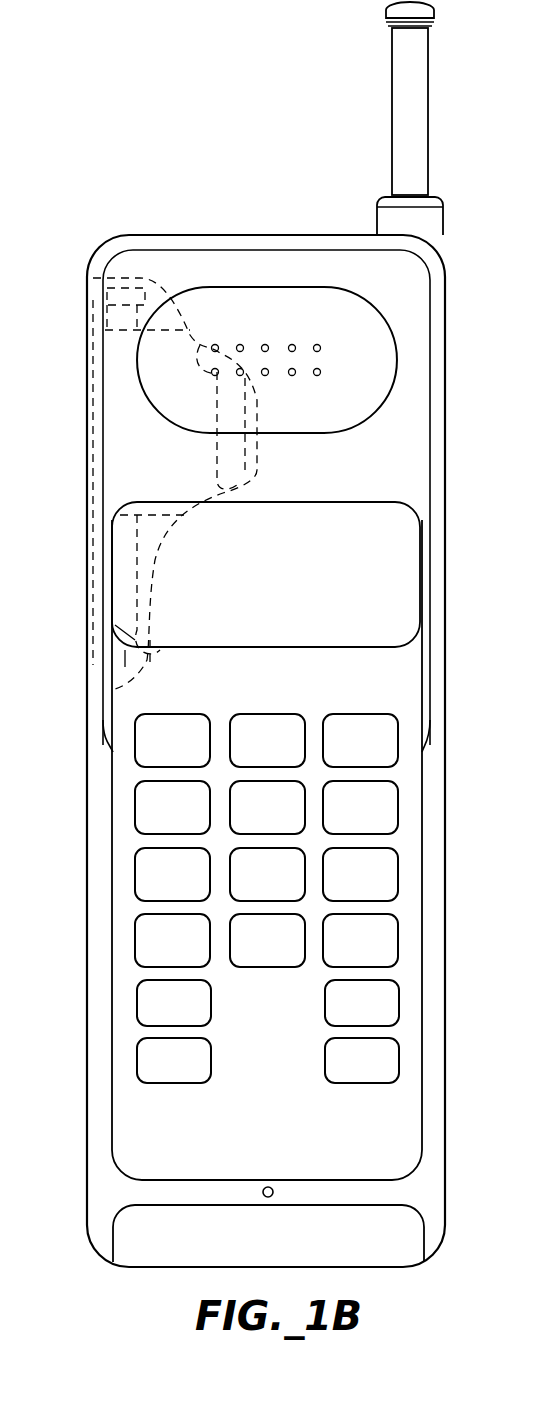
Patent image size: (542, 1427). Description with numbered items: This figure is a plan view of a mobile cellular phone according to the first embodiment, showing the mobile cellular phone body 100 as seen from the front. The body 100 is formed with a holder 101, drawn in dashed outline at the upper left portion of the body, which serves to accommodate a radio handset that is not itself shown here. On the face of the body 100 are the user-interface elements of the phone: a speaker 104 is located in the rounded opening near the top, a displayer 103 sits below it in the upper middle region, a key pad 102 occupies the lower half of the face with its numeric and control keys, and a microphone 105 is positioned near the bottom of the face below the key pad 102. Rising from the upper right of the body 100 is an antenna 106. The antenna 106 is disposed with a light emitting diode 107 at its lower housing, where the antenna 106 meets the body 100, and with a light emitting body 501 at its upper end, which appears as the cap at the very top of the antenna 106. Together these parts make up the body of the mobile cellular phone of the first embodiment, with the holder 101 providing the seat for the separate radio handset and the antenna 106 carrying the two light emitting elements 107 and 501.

The mobile cellular phone body 100 is at (97, 813).
The holder 101 is at (228, 495).
The key pad 102 is at (137, 872).
The displayer 103 is at (316, 520).
The speaker 104 is at (317, 344).
The microphone 105 is at (270, 1186).
The antenna 106 is at (402, 92).
The light emitting diode 107 is at (392, 203).
The light emitting body 501 is at (388, 6).